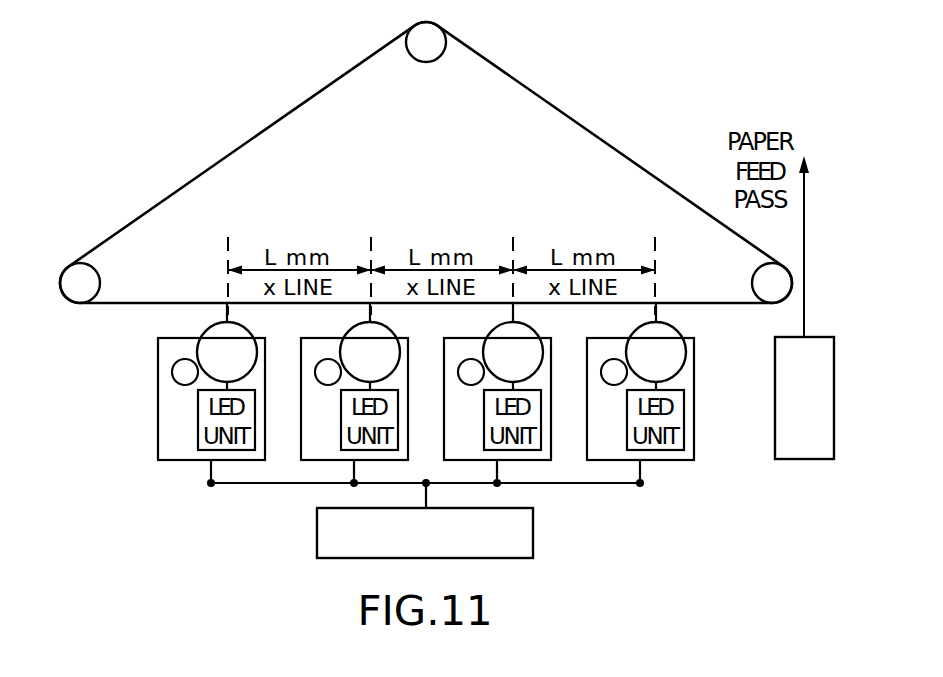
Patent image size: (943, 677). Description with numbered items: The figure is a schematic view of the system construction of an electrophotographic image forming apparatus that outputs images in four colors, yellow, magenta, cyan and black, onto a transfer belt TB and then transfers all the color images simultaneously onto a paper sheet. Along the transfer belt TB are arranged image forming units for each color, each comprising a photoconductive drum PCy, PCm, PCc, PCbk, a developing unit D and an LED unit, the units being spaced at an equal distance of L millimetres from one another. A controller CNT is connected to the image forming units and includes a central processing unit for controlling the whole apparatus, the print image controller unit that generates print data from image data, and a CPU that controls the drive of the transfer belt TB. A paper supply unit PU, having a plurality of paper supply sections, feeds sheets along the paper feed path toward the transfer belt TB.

The transfer belt TB is at (537, 96).
The paper supply unit PU is at (804, 307).
The photoconductive drum (yellow) PCy is at (227, 352).
The photoconductive drum (magenta) PCm is at (370, 352).
The photoconductive drum (cyan) PCc is at (513, 352).
The photoconductive drum (black) PCbk is at (656, 352).
The developing unit D is at (399, 372).
The controller CNT is at (425, 520).